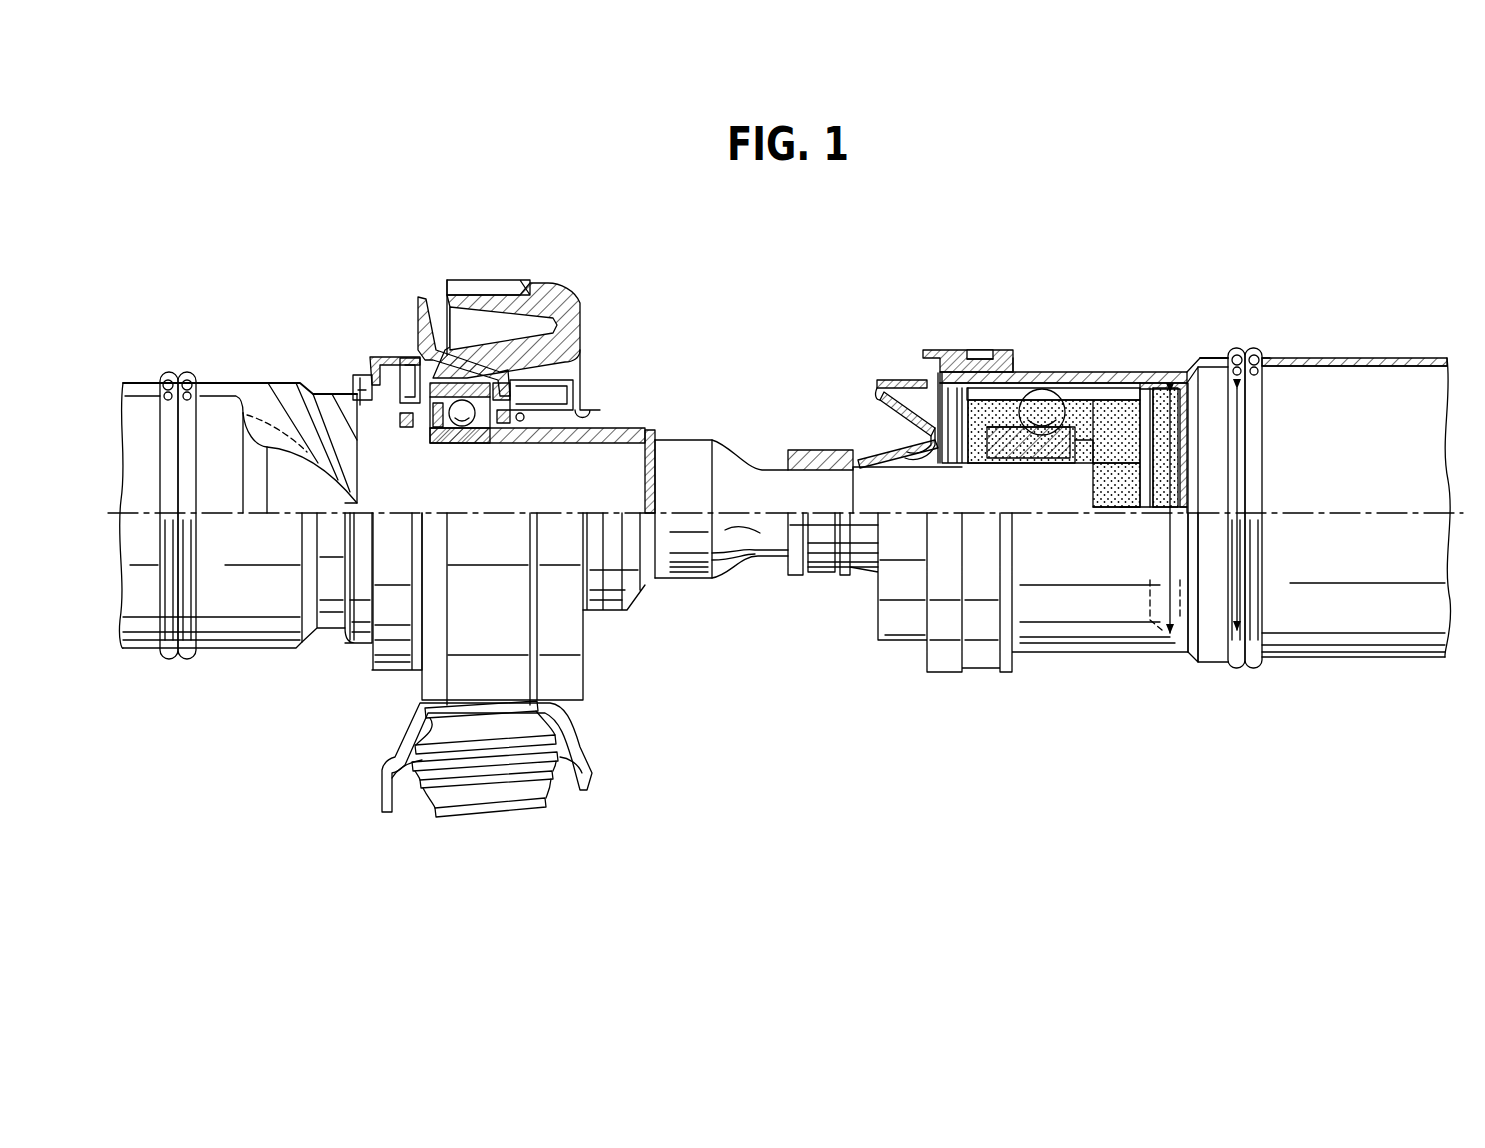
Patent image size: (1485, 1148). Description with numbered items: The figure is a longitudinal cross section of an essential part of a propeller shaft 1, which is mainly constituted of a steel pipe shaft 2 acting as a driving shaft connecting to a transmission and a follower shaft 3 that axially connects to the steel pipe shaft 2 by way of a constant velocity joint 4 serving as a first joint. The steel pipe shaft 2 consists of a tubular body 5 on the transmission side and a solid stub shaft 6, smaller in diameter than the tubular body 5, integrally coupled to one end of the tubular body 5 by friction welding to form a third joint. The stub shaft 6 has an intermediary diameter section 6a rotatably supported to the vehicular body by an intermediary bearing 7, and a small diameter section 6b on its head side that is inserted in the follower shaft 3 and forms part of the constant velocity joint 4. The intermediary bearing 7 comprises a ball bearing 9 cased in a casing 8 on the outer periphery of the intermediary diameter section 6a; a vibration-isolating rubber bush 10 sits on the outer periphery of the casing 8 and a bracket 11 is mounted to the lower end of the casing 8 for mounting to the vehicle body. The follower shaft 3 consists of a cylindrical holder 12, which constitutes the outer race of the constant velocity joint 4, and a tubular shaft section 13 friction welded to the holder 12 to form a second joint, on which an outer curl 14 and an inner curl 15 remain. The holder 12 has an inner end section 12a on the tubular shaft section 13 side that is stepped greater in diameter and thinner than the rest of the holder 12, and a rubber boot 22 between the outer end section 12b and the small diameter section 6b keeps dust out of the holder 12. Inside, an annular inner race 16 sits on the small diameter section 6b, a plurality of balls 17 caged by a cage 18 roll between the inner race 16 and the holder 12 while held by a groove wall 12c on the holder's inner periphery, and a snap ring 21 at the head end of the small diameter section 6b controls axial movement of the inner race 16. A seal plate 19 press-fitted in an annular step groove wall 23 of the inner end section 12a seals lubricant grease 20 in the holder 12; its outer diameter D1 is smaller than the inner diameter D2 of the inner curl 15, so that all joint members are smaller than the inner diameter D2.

The propeller shaft 1 is at (758, 383).
The steel pipe shaft 2 is at (215, 378).
The follower shaft 3 is at (1330, 352).
The constant velocity joint 4 is at (1075, 365).
The tubular body 5 is at (150, 372).
The stub shaft 6 is at (688, 437).
The intermediary diameter section 6a is at (616, 605).
The small diameter section 6b is at (870, 485).
The intermediary bearing 7 is at (590, 298).
The casing 8 is at (388, 356).
The ball bearing 9 is at (507, 380).
The rubber bush 10 is at (548, 295).
The bracket 11 is at (600, 774).
The cylindrical holder 12 is at (1135, 380).
The inner end section 12a is at (1225, 380).
The outer end section 12b is at (960, 372).
The groove wall 12c is at (1020, 388).
The tubular shaft section 13 is at (1396, 357).
The outer curl 14 is at (1241, 350).
The inner curl 15 is at (1240, 404).
The inner race 16 is at (1045, 490).
The balls 17 is at (1050, 400).
The cage 18 is at (1000, 372).
The seal plate 19 is at (1180, 470).
The lubricant grease 20 is at (1105, 400).
The snap ring 21 is at (1090, 460).
The rubber boot 22 is at (886, 382).
The step groove wall 23 is at (1160, 383).
The outer diameter of seal plate D1 is at (1175, 535).
The inner diameter of inner curl D2 is at (1240, 445).